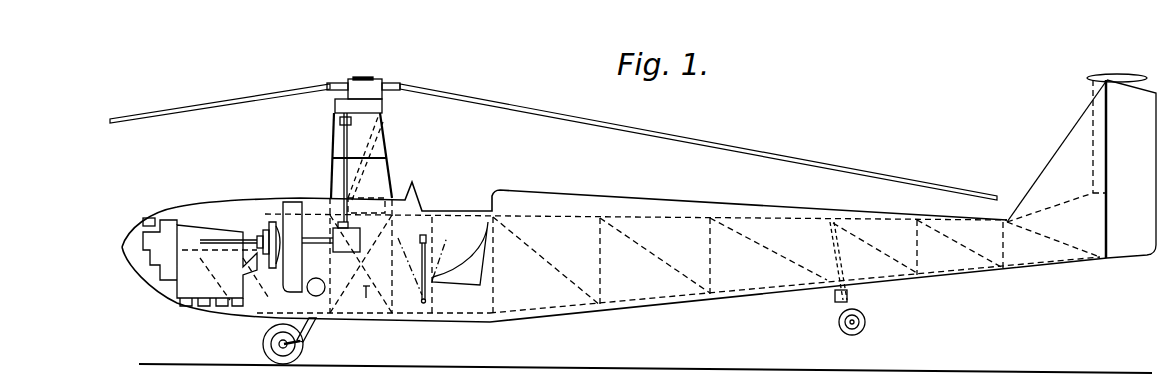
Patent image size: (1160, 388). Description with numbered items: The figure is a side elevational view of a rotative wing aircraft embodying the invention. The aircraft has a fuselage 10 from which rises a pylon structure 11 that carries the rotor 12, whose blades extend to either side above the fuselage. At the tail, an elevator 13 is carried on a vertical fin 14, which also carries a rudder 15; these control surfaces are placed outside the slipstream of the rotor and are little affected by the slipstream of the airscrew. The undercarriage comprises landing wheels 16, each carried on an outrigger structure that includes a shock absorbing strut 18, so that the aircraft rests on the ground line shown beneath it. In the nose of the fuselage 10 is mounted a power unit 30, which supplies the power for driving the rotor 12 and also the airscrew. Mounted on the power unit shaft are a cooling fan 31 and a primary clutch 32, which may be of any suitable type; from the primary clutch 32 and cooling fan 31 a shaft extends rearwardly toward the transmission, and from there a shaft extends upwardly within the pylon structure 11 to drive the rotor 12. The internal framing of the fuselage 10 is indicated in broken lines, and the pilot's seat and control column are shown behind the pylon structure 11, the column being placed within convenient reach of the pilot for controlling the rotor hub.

The fuselage 10 is at (590, 277).
The pylon structure 11 is at (333, 137).
The rotor 12 is at (388, 85).
The elevator 13 is at (1130, 73).
The vertical fin 14 is at (1080, 137).
The rudder 15 is at (1122, 227).
The landing wheels 16 is at (264, 343).
The shock absorbing strut 18 is at (310, 332).
The power unit 30 is at (220, 260).
The cooling fan 31 is at (295, 225).
The primary clutch 32 is at (273, 238).